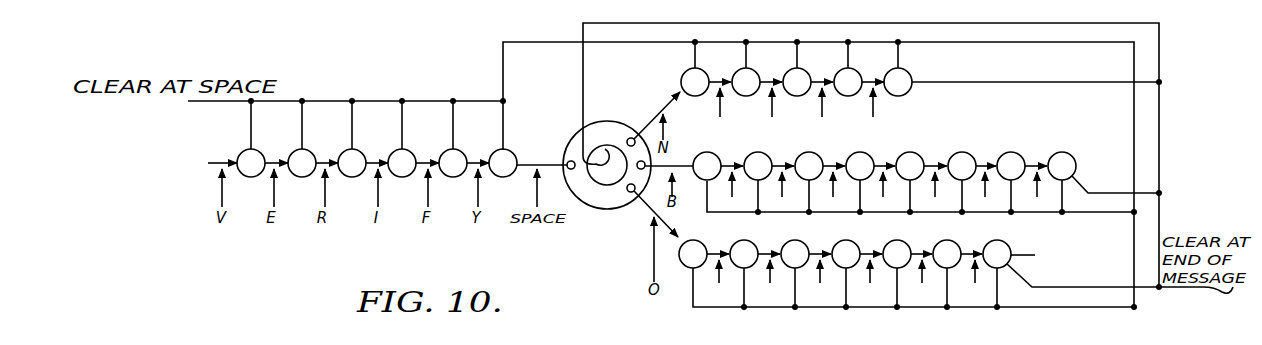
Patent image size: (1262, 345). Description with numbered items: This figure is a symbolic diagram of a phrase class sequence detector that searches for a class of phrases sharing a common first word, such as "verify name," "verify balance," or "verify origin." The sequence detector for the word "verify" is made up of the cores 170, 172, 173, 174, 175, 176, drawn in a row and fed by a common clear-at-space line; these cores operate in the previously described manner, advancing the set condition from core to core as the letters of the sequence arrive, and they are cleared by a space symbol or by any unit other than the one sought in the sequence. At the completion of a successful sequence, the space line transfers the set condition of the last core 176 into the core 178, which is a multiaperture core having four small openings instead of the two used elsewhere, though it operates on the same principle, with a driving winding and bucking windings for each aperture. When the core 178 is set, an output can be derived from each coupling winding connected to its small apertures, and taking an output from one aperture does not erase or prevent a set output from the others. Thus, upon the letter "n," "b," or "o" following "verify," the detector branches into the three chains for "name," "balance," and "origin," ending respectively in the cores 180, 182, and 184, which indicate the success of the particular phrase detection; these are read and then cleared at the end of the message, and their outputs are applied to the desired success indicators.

The core 170 is at (254, 177).
The core 172 is at (305, 177).
The core 173 is at (356, 177).
The core 174 is at (405, 177).
The core 175 is at (456, 177).
The core 176 is at (505, 177).
The multiaperture core 178 is at (607, 122).
The core 180 is at (909, 71).
The core 182 is at (1084, 148).
The core 184 is at (1008, 244).